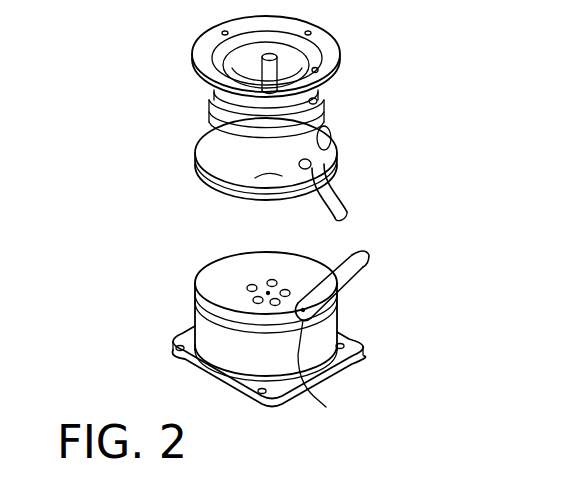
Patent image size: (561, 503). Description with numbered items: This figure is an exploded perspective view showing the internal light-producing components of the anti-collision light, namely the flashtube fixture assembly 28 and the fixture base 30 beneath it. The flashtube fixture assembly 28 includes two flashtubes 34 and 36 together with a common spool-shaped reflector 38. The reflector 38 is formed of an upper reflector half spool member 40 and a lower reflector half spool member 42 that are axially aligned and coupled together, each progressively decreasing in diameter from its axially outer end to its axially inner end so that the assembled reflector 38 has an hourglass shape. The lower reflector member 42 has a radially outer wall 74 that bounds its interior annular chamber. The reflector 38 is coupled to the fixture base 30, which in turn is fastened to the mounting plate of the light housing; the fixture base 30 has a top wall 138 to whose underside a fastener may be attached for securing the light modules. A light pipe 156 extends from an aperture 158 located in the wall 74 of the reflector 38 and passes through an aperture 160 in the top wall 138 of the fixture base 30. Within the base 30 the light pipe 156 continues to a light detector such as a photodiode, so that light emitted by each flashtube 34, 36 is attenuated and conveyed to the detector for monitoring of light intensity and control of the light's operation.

The flashtube fixture assembly 28 is at (386, 98).
The fixture base 30 is at (433, 306).
The flashtube 34 is at (221, 98).
The flashtube 36 is at (218, 113).
The spool-shaped reflector 38 is at (194, 148).
The upper reflector half spool member 40 is at (205, 80).
The lower reflector half spool member 42 is at (200, 180).
The radially outer wall 74 is at (273, 176).
The top wall 138 is at (222, 287).
The light pipe 156 is at (336, 198).
The aperture 158 is at (320, 158).
The aperture 160 is at (334, 369).